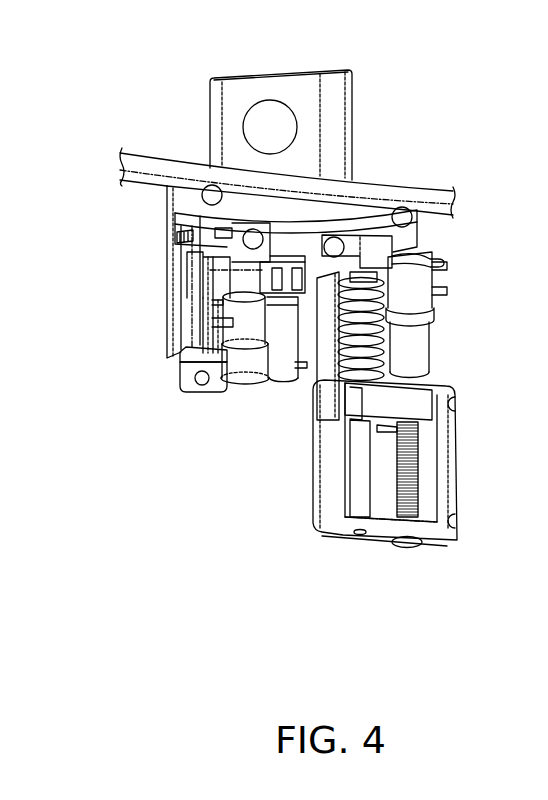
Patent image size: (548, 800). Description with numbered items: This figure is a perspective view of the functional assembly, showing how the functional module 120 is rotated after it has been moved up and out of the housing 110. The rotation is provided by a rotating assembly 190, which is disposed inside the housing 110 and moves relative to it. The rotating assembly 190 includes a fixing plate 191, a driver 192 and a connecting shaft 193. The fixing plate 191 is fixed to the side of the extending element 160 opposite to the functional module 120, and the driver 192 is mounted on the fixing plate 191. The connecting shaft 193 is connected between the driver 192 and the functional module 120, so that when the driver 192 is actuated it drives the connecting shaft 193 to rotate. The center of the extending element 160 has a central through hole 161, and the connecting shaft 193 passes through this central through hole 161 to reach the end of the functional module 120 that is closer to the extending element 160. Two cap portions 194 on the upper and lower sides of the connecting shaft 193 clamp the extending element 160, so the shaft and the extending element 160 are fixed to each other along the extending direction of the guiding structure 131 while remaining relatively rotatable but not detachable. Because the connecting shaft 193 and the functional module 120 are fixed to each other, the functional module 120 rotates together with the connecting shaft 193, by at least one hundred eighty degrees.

The housing 110 is at (158, 163).
The functional module 120 is at (275, 73).
The guiding structure 131 is at (363, 486).
The extending element 160 is at (323, 238).
The central through hole 161 is at (302, 222).
The rotating assembly 190 is at (70, 402).
The fixing plate 191 is at (322, 380).
The driver 192 is at (283, 340).
The connecting shaft 193 is at (260, 266).
The cap portions 194 is at (178, 239).